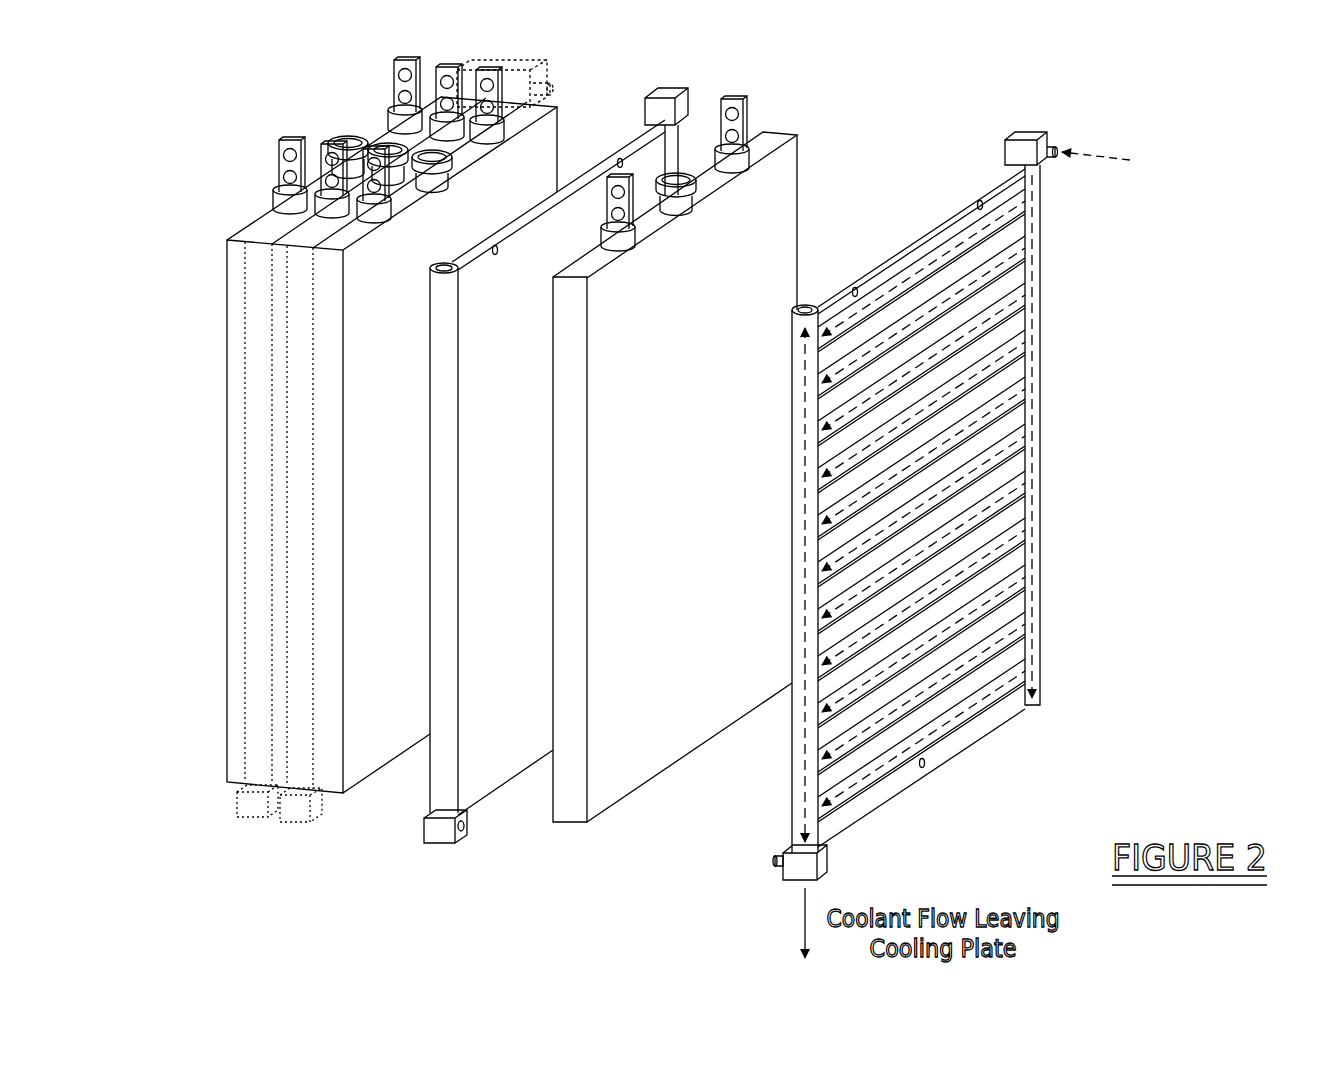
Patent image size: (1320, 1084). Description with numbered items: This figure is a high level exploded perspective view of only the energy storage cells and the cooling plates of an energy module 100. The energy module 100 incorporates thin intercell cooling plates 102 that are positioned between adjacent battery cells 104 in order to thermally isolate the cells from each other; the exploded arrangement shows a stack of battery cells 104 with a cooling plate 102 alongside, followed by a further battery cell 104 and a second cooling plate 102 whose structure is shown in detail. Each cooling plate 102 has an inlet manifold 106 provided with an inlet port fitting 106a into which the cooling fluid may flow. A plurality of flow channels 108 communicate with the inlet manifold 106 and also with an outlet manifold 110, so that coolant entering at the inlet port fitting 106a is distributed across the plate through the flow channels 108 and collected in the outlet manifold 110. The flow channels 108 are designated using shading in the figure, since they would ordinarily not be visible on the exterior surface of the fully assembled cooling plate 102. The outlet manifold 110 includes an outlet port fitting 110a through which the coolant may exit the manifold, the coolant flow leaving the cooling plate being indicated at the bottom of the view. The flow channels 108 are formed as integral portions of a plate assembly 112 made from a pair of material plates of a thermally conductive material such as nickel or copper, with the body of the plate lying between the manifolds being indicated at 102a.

The energy module 100 is at (265, 117).
The cooling plate 102 is at (653, 499).
The cooling plate body 102a is at (1017, 367).
The battery cell 104 is at (515, 117).
The inlet manifold 106 is at (1043, 405).
The inlet port fitting 106a is at (1035, 138).
The flow channels 108 is at (927, 263).
The outlet manifold 110 is at (800, 805).
The outlet port fitting 110a is at (822, 865).
The plate assembly 112 is at (992, 297).